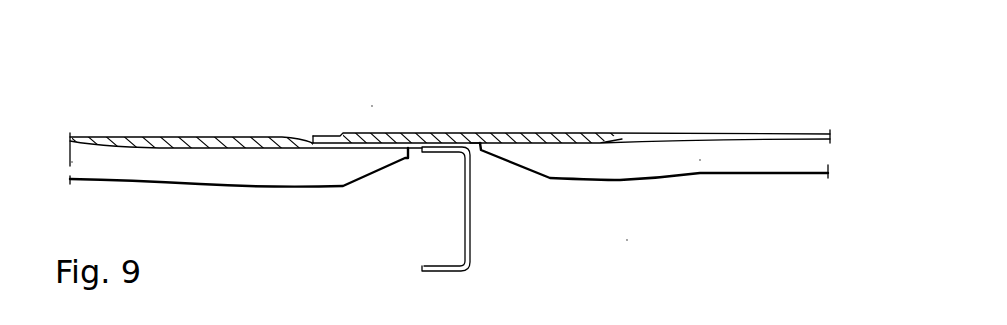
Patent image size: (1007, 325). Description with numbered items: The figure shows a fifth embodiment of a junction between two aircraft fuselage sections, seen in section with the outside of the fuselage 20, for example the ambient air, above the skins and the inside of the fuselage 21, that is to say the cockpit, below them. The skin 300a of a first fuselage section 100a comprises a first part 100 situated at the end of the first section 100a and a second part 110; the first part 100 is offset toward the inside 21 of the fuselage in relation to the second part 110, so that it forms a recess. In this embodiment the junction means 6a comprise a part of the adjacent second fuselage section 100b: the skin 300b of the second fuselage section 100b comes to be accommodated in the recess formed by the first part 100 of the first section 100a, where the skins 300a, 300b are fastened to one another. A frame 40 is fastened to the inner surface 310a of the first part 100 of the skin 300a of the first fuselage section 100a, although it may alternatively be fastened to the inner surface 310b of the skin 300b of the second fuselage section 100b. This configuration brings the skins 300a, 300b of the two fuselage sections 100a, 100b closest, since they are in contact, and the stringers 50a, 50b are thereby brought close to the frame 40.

The junction means 6a is at (372, 106).
The outside of the fuselage 20 is at (571, 165).
The inside of the fuselage 21 is at (627, 240).
The frame 40 is at (472, 198).
The stringer 50a is at (240, 212).
The stringer 50b is at (625, 163).
The first part 100 is at (234, 168).
The first fuselage section 100a is at (239, 210).
The second fuselage section 100b is at (654, 197).
The second part 110 is at (141, 128).
The skin 300a is at (217, 132).
The skin 300b is at (713, 134).
The inner surface 310a is at (417, 152).
The inner surface 310b is at (517, 148).